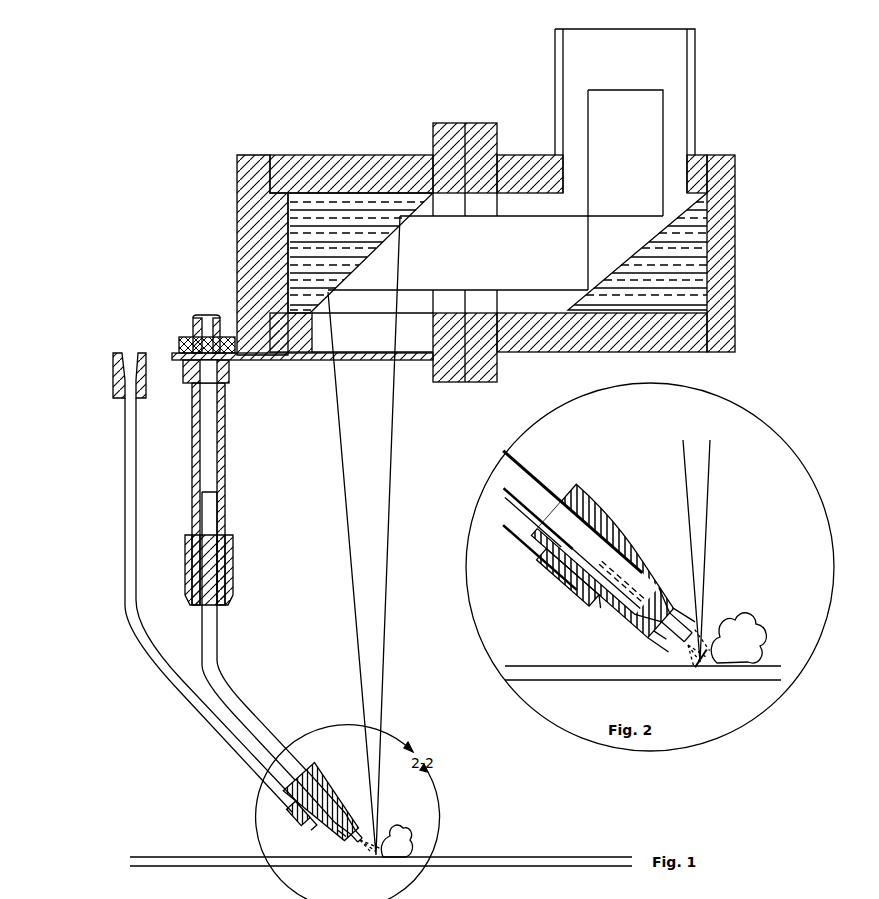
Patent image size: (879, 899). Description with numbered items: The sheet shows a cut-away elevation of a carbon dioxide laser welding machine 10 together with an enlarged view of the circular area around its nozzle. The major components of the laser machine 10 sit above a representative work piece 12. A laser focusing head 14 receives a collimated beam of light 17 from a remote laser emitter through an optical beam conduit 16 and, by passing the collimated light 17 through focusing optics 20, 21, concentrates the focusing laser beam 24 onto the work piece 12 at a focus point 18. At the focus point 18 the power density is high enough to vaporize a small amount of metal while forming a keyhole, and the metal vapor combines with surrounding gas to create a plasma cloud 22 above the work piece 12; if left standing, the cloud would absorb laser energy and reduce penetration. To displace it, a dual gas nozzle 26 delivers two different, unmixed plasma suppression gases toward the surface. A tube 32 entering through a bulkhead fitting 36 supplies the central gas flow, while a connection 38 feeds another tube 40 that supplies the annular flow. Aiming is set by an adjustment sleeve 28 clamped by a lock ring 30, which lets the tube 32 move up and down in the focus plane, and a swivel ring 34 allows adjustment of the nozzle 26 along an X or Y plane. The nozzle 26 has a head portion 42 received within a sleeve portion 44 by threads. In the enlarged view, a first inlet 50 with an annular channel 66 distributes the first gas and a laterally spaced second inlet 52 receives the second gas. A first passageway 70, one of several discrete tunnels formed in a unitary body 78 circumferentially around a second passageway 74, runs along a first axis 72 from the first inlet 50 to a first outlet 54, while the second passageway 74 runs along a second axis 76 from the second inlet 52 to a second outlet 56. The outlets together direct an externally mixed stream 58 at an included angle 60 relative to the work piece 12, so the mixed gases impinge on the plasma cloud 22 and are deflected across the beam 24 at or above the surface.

In FIG. 1, the laser machine 10 is at (130, 140).
In FIG. 1, the work piece 12 is at (515, 856).
In FIG. 2, the work piece 12 is at (562, 665).
In FIG. 1, the laser focusing head 14 is at (740, 252).
In FIG. 1, the optical beam conduit 16 is at (692, 145).
In FIG. 1, the collimated beam of light 17 is at (658, 100).
In FIG. 1, the focus point 18 is at (378, 850).
In FIG. 2, the focus point 18 is at (701, 658).
In FIG. 1, the focusing optic 20 is at (373, 272).
In FIG. 1, the focusing optic 21 is at (622, 255).
In FIG. 1, the plasma cloud 22 is at (405, 830).
In FIG. 2, the plasma cloud 22 is at (756, 632).
In FIG. 1, the focusing laser beam 24 is at (386, 624).
In FIG. 2, the focusing laser beam 24 is at (708, 498).
In FIG. 1, the dual gas nozzle 26 is at (348, 790).
In FIG. 2, the dual gas nozzle 26 is at (600, 569).
In FIG. 1, the adjustment sleeve 28 is at (223, 482).
In FIG. 1, the lock ring 30 is at (233, 568).
In FIG. 1, the tube 32 is at (218, 645).
In FIG. 1, the swivel ring 34 is at (230, 362).
In FIG. 1, the bulkhead fitting 36 is at (206, 314).
In FIG. 1, the connection 38 is at (117, 353).
In FIG. 1, the tube 40 is at (178, 702).
In FIG. 1, the head portion 42 is at (369, 844).
In FIG. 2, the head portion 42 is at (599, 601).
In FIG. 1, the sleeve portion 44 is at (347, 785).
In FIG. 2, the sleeve portion 44 is at (611, 560).
In FIG. 1, the first inlet 50 is at (299, 813).
In FIG. 2, the first inlet 50 is at (568, 577).
In FIG. 1, the second inlet 52 is at (310, 824).
In FIG. 2, the second inlet 52 is at (572, 512).
In FIG. 2, the first outlet 54 is at (677, 627).
In FIG. 1, the second outlet 56 is at (356, 836).
In FIG. 2, the second outlet 56 is at (688, 637).
In FIG. 2, the externally mixed stream 58 is at (671, 629).
In FIG. 2, the included angle 60 is at (695, 649).
In FIG. 1, the channel 66 is at (320, 796).
In FIG. 2, the channel 66 is at (536, 520).
In FIG. 1, the first passageway 70 is at (347, 825).
In FIG. 2, the first passageway 70 is at (592, 566).
In FIG. 2, the first axis 72 is at (660, 634).
In FIG. 1, the second passageway 74 is at (342, 833).
In FIG. 2, the second passageway 74 is at (623, 582).
In FIG. 2, the second axis 76 is at (607, 566).
In FIG. 2, the unitary body 78 is at (540, 557).